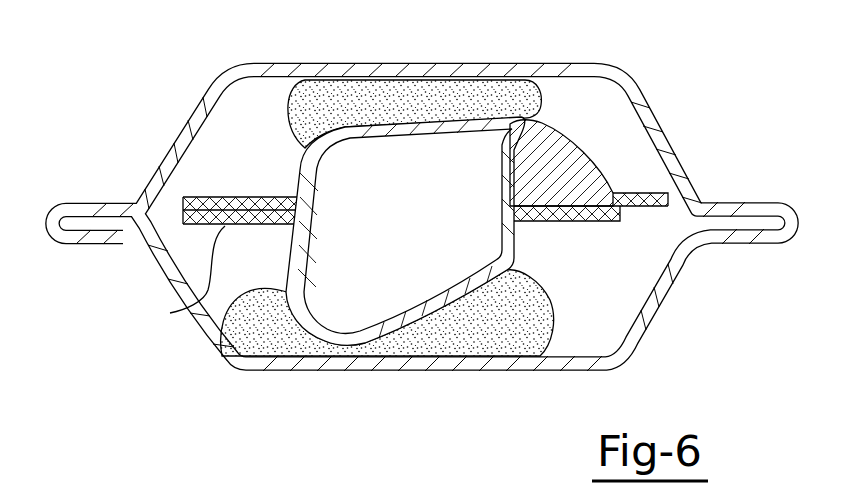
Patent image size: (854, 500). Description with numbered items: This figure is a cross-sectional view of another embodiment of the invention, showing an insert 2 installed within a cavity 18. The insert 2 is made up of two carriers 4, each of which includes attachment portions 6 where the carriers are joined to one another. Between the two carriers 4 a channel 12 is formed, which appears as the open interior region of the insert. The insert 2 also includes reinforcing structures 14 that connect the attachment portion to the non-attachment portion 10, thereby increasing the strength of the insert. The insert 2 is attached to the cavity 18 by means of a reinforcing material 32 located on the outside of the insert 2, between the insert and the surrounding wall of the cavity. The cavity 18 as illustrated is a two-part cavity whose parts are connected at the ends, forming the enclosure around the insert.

The insert 2 is at (281, 153).
The carrier 4 is at (512, 176).
The attachment portion 6 is at (192, 279).
The non-attachment portion 10 is at (366, 135).
The channel 12 is at (410, 233).
The reinforcing structure 14 is at (578, 151).
The cavity 18 is at (407, 73).
The reinforcing material 32 is at (338, 78).